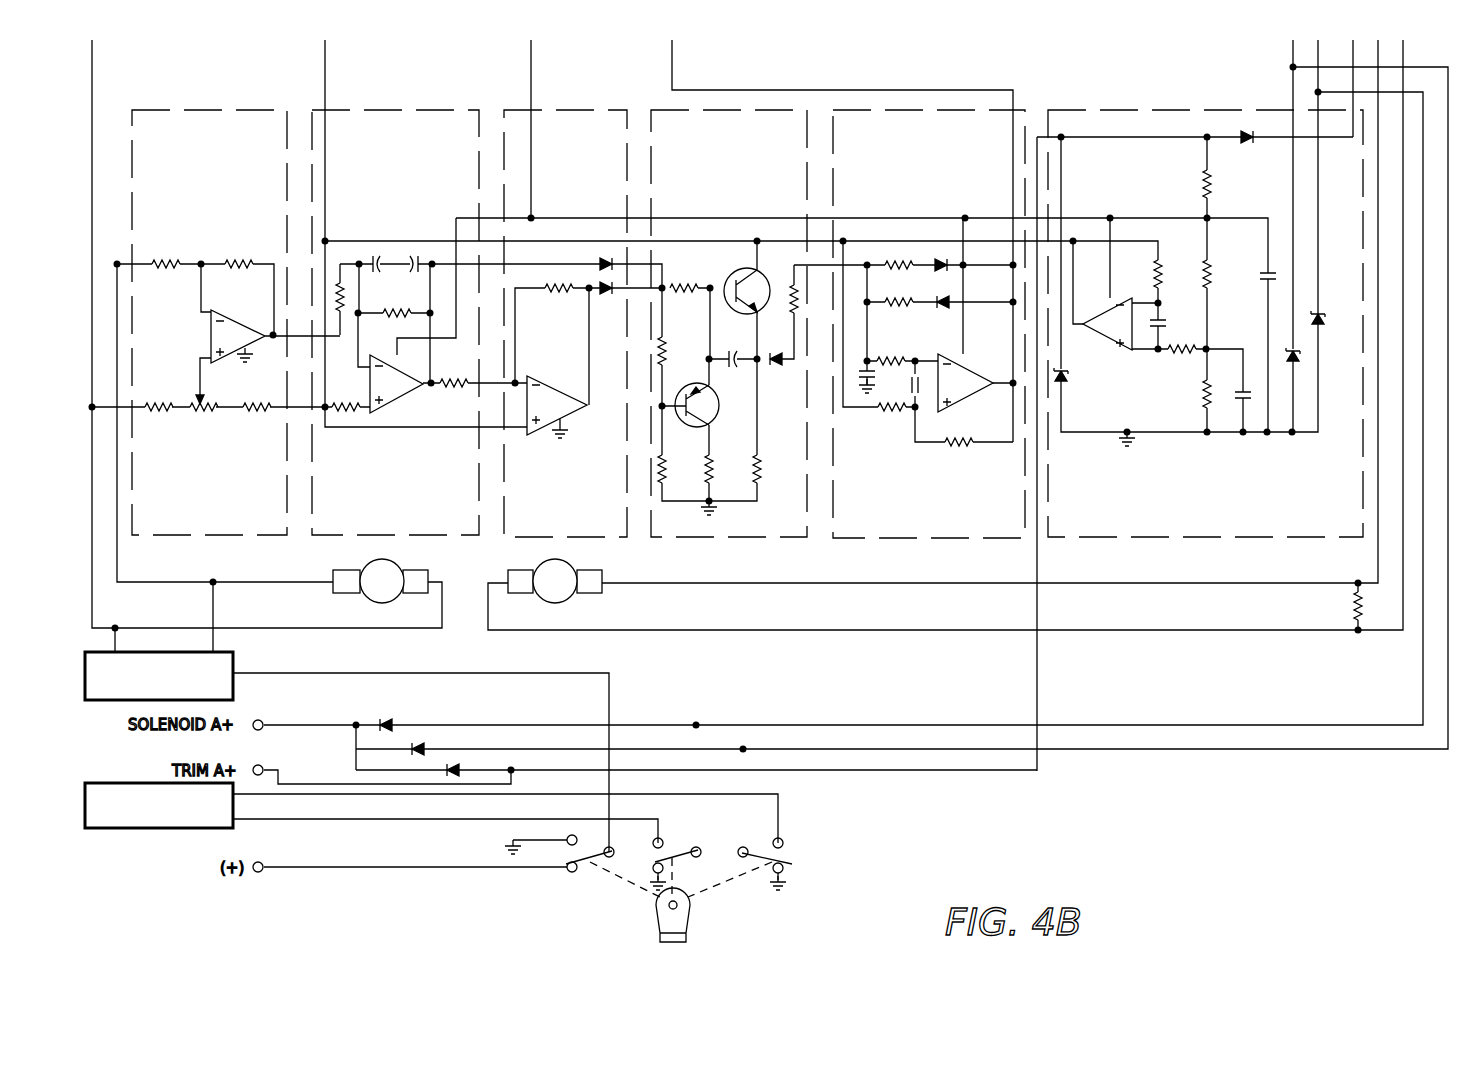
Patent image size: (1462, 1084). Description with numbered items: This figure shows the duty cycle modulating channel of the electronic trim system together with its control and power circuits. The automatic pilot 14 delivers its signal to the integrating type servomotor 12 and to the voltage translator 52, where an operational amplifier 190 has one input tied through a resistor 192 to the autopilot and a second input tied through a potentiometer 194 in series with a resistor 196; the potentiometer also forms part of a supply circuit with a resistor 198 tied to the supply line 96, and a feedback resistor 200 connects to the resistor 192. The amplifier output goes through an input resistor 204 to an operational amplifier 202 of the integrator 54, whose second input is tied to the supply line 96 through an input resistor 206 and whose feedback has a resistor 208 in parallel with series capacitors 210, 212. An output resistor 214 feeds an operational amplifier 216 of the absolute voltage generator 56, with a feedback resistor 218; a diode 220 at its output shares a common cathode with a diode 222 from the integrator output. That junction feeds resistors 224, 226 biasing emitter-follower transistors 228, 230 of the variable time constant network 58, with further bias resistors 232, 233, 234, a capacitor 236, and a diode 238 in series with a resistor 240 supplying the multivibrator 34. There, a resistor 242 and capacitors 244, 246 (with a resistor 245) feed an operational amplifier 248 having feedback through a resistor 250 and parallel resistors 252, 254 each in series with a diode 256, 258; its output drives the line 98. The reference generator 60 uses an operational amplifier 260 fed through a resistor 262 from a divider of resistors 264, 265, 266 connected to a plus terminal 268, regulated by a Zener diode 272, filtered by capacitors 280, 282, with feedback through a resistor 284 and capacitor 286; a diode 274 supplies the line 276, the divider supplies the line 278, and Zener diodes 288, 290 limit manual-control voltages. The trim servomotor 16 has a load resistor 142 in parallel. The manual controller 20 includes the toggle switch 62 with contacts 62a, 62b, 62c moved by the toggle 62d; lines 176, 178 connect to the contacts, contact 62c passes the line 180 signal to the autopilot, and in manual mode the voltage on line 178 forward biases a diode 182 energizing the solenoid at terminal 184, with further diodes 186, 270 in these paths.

The integrating type servomotor 12 is at (396, 560).
The automatic pilot 14 is at (233, 656).
The trim servomotor 16 is at (570, 560).
The manual controller 20 is at (130, 843).
The multivibrator 34 is at (948, 156).
The voltage translator 52 is at (219, 156).
The integrator 54 is at (419, 156).
The absolute voltage generator 56 is at (586, 156).
The variable time constant network 58 is at (740, 156).
The reference generator 60 is at (1124, 171).
The toggle switch 62 is at (704, 876).
The contact 62a is at (784, 858).
The contact 62b is at (672, 845).
The contact 62c is at (586, 866).
The toggle 62d is at (645, 916).
The supply line 96 is at (325, 70).
The line 98 is at (672, 82).
The load resistor 142 is at (1352, 610).
The line 176 is at (1293, 62).
The line 178 is at (1318, 88).
The line 180 is at (316, 868).
The diode 182 is at (392, 720).
The terminal 184 is at (262, 719).
The diode 186 is at (424, 744).
The operational amplifier 190 is at (256, 306).
The resistor 192 is at (168, 258).
The potentiometer 194 is at (204, 413).
The resistor 196 is at (158, 413).
The resistor 198 is at (257, 413).
The resistor 200 is at (241, 258).
The operational amplifier 202 is at (418, 396).
The input resistor 204 is at (348, 298).
The input resistor 206 is at (345, 413).
The resistor 208 is at (406, 295).
The capacitor 210 is at (380, 250).
The capacitor 212 is at (418, 250).
The output resistor 214 is at (457, 365).
The operational amplifier 216 is at (560, 380).
The resistor 218 is at (555, 294).
The diode 220 is at (600, 296).
The diode 222 is at (608, 258).
The resistor 224 is at (684, 282).
The resistor 226 is at (670, 345).
The transistor 228 is at (720, 410).
The transistor 230 is at (745, 268).
The resistor 232 is at (666, 468).
The resistor 233 is at (713, 468).
The resistor 234 is at (761, 468).
The capacitor 236 is at (733, 350).
The diode 238 is at (775, 367).
The resistor 240 is at (794, 280).
The resistor 242 is at (893, 354).
The capacitor 244 is at (859, 378).
The resistor 245 is at (888, 413).
The capacitor 246 is at (918, 395).
The operational amplifier 248 is at (986, 390).
The resistor 250 is at (960, 448).
The resistor 252 is at (898, 258).
The resistor 254 is at (897, 293).
The diode 256 is at (943, 258).
The diode 258 is at (946, 310).
The operational amplifier 260 is at (1094, 336).
The resistor 262 is at (1180, 355).
The resistor 264 is at (1213, 184).
The resistor 265 is at (1213, 278).
The resistor 266 is at (1201, 392).
The plus terminal 268 is at (262, 764).
The diode 270 is at (459, 765).
The Zener diode 272 is at (1067, 380).
The diode 274 is at (1237, 128).
The line 276 is at (1360, 58).
The line 278 is at (531, 70).
The filter capacitor 280 is at (1258, 280).
The filter capacitor 282 is at (1237, 400).
The resistor 284 is at (1152, 270).
The capacitor 286 is at (1166, 322).
The Zener diode 288 is at (1300, 358).
The Zener diode 290 is at (1324, 310).